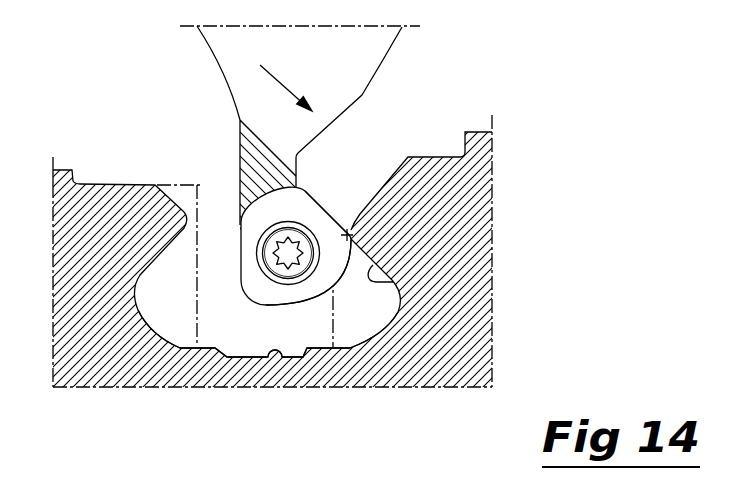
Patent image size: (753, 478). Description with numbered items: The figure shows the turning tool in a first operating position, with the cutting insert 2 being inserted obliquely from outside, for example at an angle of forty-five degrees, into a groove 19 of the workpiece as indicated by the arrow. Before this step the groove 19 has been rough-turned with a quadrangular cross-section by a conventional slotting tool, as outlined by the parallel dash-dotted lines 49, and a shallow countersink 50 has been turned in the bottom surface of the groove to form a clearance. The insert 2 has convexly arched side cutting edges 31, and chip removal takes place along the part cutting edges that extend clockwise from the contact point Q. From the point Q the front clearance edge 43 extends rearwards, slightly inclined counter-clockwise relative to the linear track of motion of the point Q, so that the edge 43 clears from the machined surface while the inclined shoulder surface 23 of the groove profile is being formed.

The cutting insert 2 is at (233, 266).
The groove 19 is at (206, 354).
The shoulder surface 23 is at (390, 282).
The side cutting edge 31 is at (317, 297).
The front clearance edge 43 is at (316, 201).
The parallel dash-dotted lines 49 is at (188, 334).
The shallow countersink 50 is at (278, 358).
The contact point Q is at (354, 229).